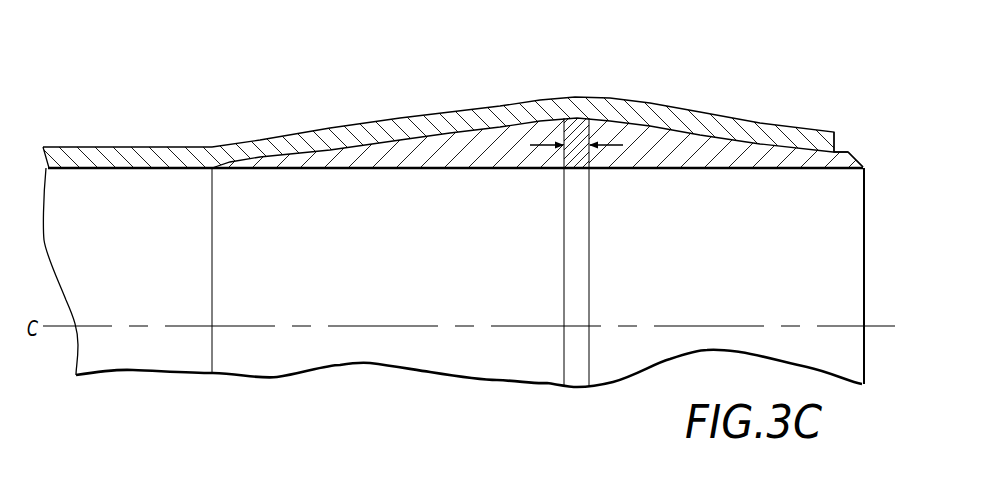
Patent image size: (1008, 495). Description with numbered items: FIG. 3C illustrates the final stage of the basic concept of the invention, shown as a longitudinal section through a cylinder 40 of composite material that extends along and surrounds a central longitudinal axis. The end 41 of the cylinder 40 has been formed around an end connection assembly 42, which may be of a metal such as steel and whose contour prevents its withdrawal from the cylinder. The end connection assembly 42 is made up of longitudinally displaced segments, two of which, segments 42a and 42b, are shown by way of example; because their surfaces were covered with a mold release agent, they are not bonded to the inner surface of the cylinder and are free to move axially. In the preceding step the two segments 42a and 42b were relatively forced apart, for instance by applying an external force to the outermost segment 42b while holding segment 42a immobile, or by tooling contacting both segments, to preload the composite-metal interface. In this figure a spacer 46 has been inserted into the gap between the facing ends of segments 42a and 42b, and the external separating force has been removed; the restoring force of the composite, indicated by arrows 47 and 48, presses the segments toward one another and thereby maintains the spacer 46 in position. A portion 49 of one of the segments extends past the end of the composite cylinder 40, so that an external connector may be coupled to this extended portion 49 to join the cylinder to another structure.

The cylinder 40 is at (117, 147).
The end of the cylinder 41 is at (640, 73).
The end connection assembly 42 is at (469, 118).
The segment 42a is at (420, 143).
The segment 42b is at (695, 138).
The spacer 46 is at (574, 126).
The arrow 47 is at (535, 145).
The arrow 48 is at (617, 145).
The extended portion 49 is at (848, 152).